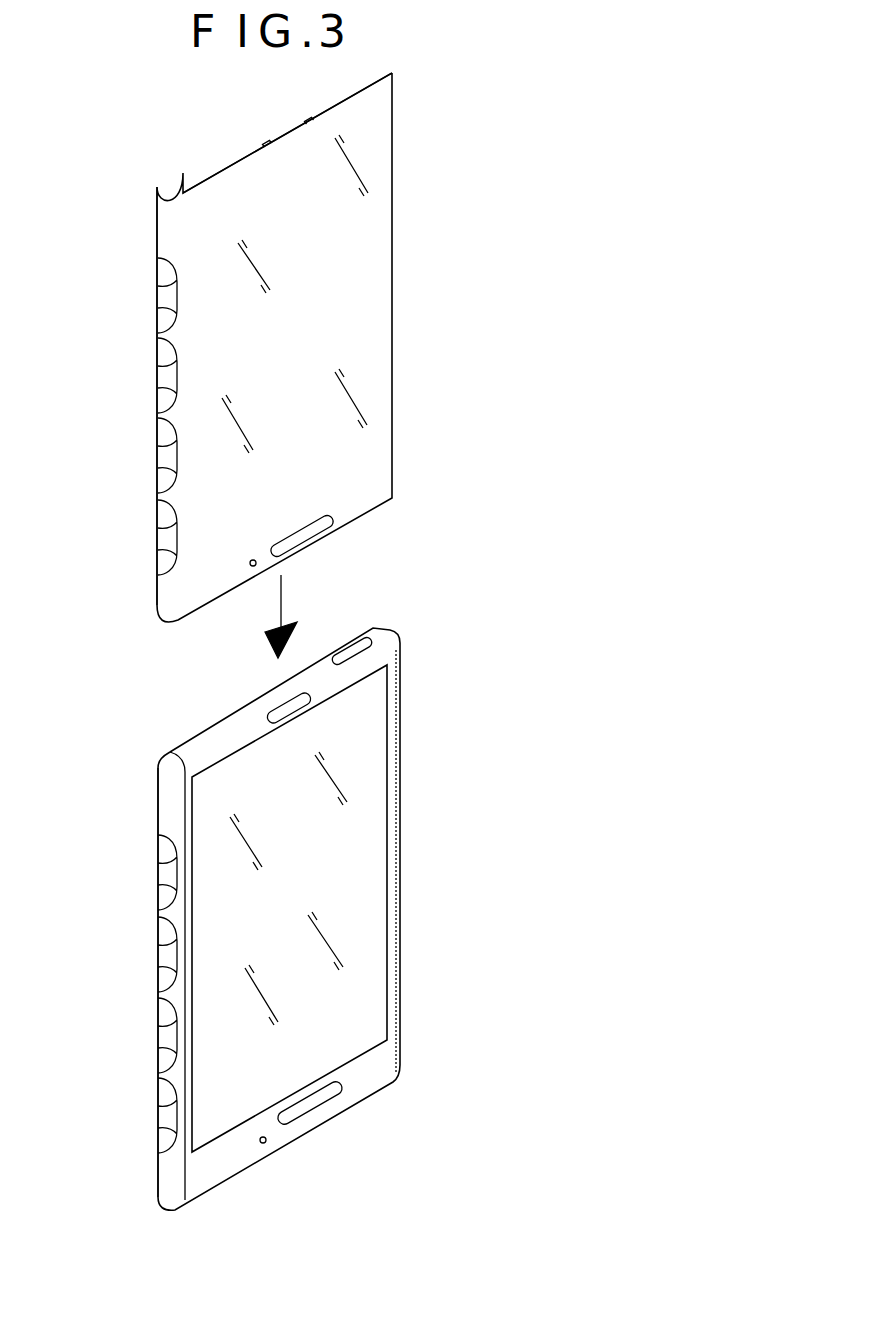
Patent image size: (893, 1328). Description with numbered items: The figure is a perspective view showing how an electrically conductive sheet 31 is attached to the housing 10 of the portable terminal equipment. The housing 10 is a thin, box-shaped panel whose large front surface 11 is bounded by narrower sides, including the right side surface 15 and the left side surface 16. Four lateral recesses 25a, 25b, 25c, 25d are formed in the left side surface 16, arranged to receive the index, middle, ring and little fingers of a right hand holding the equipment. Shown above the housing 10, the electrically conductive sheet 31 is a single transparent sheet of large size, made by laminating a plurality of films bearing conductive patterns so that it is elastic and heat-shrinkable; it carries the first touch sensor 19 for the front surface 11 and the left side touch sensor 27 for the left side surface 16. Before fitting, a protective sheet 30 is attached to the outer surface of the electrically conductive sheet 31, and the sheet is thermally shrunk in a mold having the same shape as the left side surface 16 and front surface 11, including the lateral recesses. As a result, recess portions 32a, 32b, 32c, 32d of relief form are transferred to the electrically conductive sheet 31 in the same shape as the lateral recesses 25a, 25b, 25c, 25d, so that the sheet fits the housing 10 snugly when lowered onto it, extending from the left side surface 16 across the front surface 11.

The housing 10 is at (142, 777).
The front surface 11 is at (377, 1055).
The right side surface 15 is at (400, 763).
The left side surface 16 is at (160, 818).
The first touch sensor 19 is at (370, 325).
The lateral recess 25a is at (160, 873).
The lateral recess 25b is at (160, 953).
The lateral recess 25c is at (160, 1037).
The lateral recess 25d is at (160, 1115).
The left side touch sensor 27 is at (170, 228).
The protective sheet 30 is at (378, 388).
The electrically conductive sheet 31 is at (236, 139).
The recess portion 32a is at (160, 298).
The recess portion 32b is at (160, 380).
The recess portion 32c is at (160, 459).
The recess portion 32d is at (160, 535).